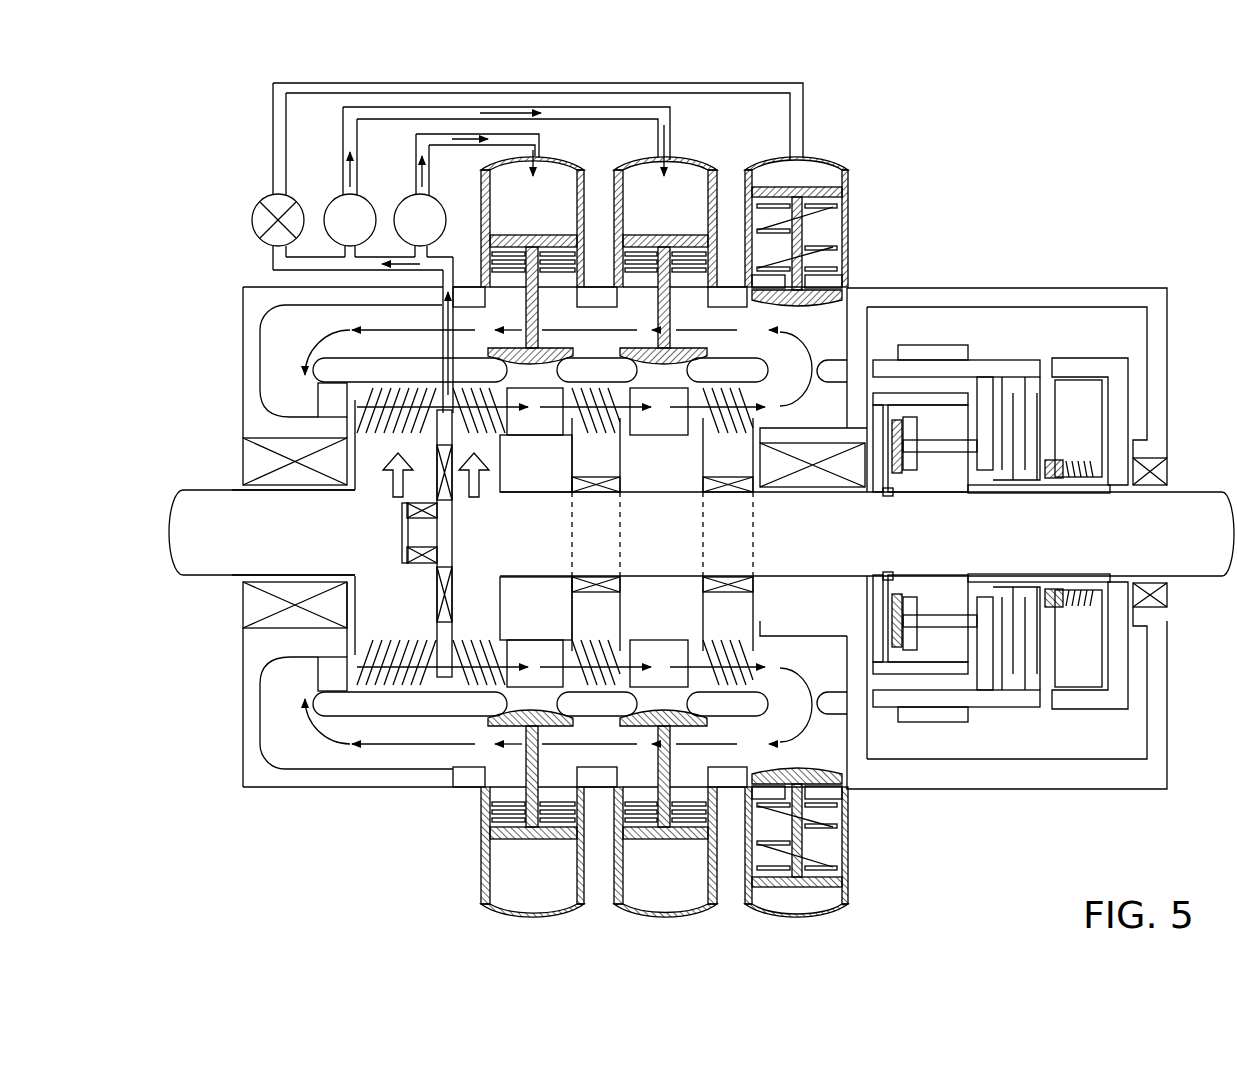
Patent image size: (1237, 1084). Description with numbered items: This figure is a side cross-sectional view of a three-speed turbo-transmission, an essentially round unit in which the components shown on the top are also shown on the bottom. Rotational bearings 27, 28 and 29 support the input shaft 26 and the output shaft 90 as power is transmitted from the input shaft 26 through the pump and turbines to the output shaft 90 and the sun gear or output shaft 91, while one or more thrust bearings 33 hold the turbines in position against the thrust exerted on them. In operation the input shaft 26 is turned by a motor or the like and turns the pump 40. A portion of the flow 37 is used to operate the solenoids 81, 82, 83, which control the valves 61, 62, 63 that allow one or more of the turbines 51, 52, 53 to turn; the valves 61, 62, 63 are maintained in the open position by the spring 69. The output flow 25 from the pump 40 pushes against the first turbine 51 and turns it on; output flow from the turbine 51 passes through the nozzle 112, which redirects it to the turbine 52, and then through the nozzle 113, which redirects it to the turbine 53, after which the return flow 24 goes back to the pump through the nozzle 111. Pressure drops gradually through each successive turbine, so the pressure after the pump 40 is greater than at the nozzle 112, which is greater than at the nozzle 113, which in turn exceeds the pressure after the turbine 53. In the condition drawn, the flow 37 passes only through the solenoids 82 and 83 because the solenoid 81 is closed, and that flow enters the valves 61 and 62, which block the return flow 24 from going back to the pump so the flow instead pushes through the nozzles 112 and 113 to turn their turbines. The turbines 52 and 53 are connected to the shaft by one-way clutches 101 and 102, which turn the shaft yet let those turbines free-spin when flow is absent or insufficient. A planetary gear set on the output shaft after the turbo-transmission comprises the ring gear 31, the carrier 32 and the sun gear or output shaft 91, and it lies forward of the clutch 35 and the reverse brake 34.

The return flow 24 is at (807, 350).
The output flow 25 is at (423, 398).
The input shaft 26 is at (195, 488).
The rotational bearing 27 is at (800, 590).
The rotational bearing 28 is at (410, 553).
The rotational bearing 29 is at (1160, 610).
The ring gear 31 is at (917, 393).
The carrier 32 is at (983, 360).
The thrust bearing 33 is at (437, 487).
The reverse brake 34 is at (932, 722).
The clutch 35 is at (1102, 413).
The flow 37 is at (433, 260).
The pump 40 is at (350, 437).
The first turbine 51 is at (536, 441).
The turbine 52 is at (662, 441).
The turbine 53 is at (750, 418).
The valve 61 is at (573, 167).
The valve 62 is at (700, 167).
The valve 63 is at (826, 226).
The spring 69 is at (846, 236).
The solenoid 81 is at (252, 217).
The solenoid 82 is at (337, 197).
The solenoid 83 is at (410, 193).
The output shaft 90 is at (508, 577).
The sun gear or output shaft 91 is at (1185, 578).
The one-way clutch 101 is at (610, 488).
The one-way clutch 102 is at (742, 488).
The nozzle 111 is at (353, 440).
The nozzle 112 is at (513, 436).
The nozzle 113 is at (638, 436).